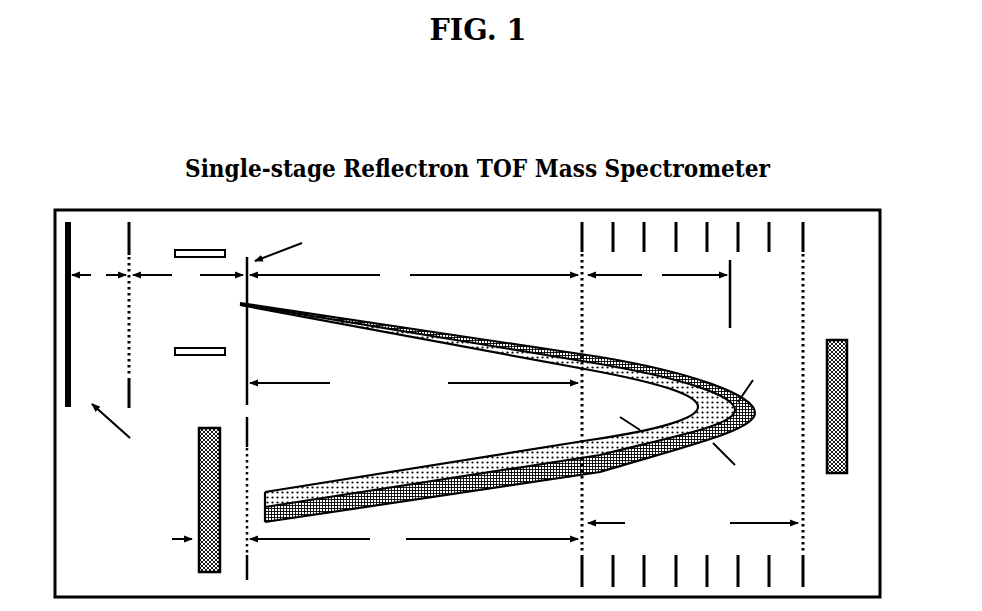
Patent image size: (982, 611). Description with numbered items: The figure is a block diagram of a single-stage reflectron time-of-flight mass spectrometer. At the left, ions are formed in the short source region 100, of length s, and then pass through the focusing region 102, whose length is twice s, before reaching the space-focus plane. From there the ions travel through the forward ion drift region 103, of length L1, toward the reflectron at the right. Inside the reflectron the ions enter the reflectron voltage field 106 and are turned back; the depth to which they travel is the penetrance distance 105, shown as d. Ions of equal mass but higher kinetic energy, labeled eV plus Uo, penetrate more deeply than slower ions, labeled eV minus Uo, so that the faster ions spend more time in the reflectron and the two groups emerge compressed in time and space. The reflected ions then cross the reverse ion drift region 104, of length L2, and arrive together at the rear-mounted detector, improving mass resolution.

The source region 100 is at (95, 260).
The focusing region 102 is at (155, 263).
The forward ion drift region 103 is at (420, 264).
The reverse ion drift region 104 is at (400, 557).
The penetrance distance 105 is at (650, 291).
The reflectron voltage field 106 is at (640, 488).